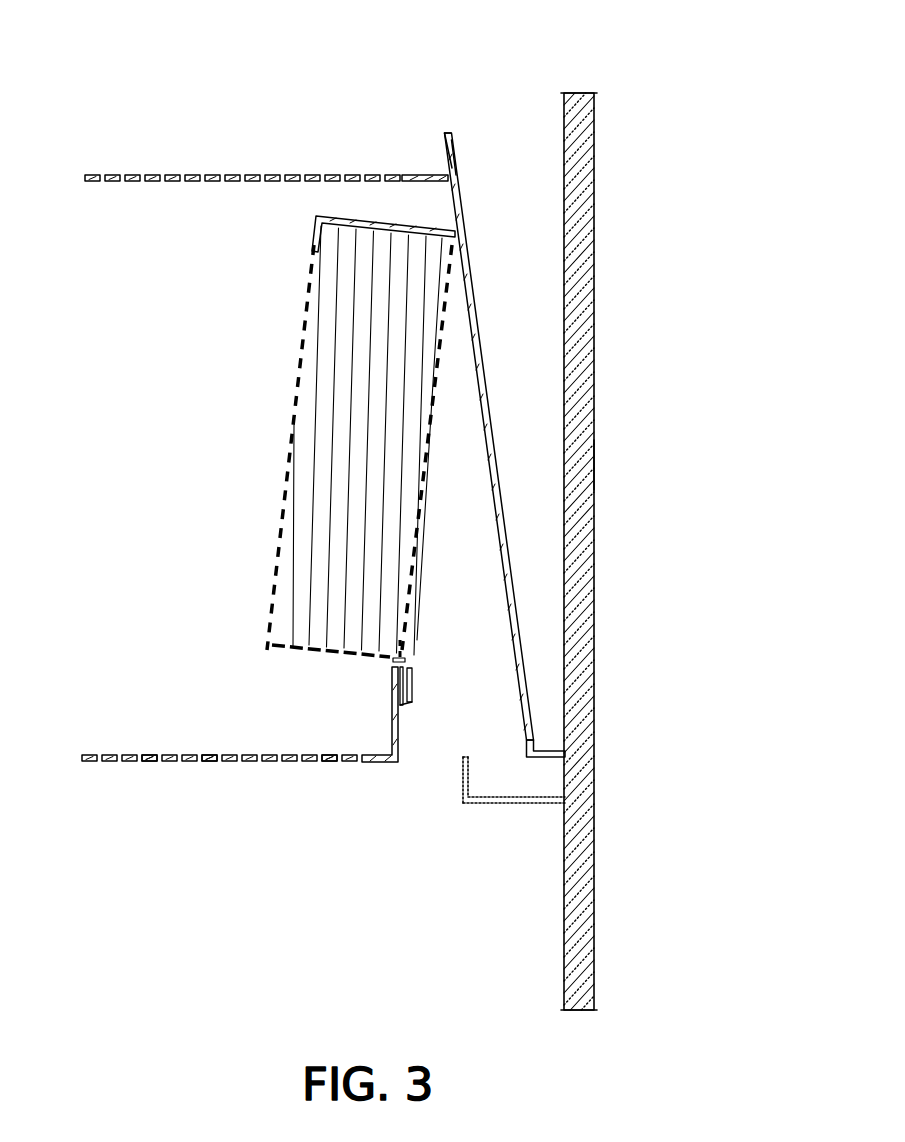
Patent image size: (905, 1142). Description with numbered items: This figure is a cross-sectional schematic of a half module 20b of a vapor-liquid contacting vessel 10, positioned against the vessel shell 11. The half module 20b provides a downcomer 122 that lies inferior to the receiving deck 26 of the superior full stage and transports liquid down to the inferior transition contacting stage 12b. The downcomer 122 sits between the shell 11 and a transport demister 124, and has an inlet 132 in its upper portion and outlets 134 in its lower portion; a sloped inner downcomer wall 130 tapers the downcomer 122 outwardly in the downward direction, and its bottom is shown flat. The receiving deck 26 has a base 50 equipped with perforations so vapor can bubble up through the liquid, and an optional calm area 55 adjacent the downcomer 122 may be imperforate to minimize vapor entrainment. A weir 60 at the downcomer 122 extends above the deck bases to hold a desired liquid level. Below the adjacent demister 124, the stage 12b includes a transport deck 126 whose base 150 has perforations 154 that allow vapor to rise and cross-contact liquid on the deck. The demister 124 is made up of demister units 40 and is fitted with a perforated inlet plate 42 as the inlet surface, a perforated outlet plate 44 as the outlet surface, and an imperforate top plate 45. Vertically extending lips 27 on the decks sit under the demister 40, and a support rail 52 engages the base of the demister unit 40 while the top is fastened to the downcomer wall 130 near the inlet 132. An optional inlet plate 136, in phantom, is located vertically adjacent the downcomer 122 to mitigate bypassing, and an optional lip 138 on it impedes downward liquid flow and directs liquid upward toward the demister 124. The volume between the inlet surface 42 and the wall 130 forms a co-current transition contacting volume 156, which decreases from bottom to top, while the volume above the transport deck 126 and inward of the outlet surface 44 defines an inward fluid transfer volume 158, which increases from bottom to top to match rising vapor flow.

The vessel 10 is at (605, 148).
The shell 11 is at (592, 463).
The transition contacting stage 12b is at (170, 96).
The half module 20b is at (115, 433).
The receiving deck 26 is at (305, 146).
The vertically extending lip 27 is at (392, 727).
The demister unit 40 is at (366, 414).
The perforated inlet plate 42 is at (423, 497).
The perforated outlet plate 44 is at (305, 350).
The imperforate top plate 45 is at (422, 232).
The base of receiving deck 50 is at (367, 175).
The support rail 52 is at (415, 690).
The calm area 55 is at (425, 174).
The weir 60 is at (453, 162).
The downcomer 122 is at (560, 354).
The transport demister 124 is at (287, 292).
The transport deck 126 is at (158, 733).
The sloped inner downcomer wall 130 is at (510, 610).
The downcomer inlet 132 is at (513, 115).
The downcomer outlet 134 is at (524, 741).
The inlet plate 136 is at (546, 803).
The lip 138 is at (464, 777).
The base of transport deck 150 is at (254, 752).
The perforations 154 is at (218, 762).
The transition contacting volume 156 is at (484, 578).
The inward fluid transfer volume 158 is at (226, 461).